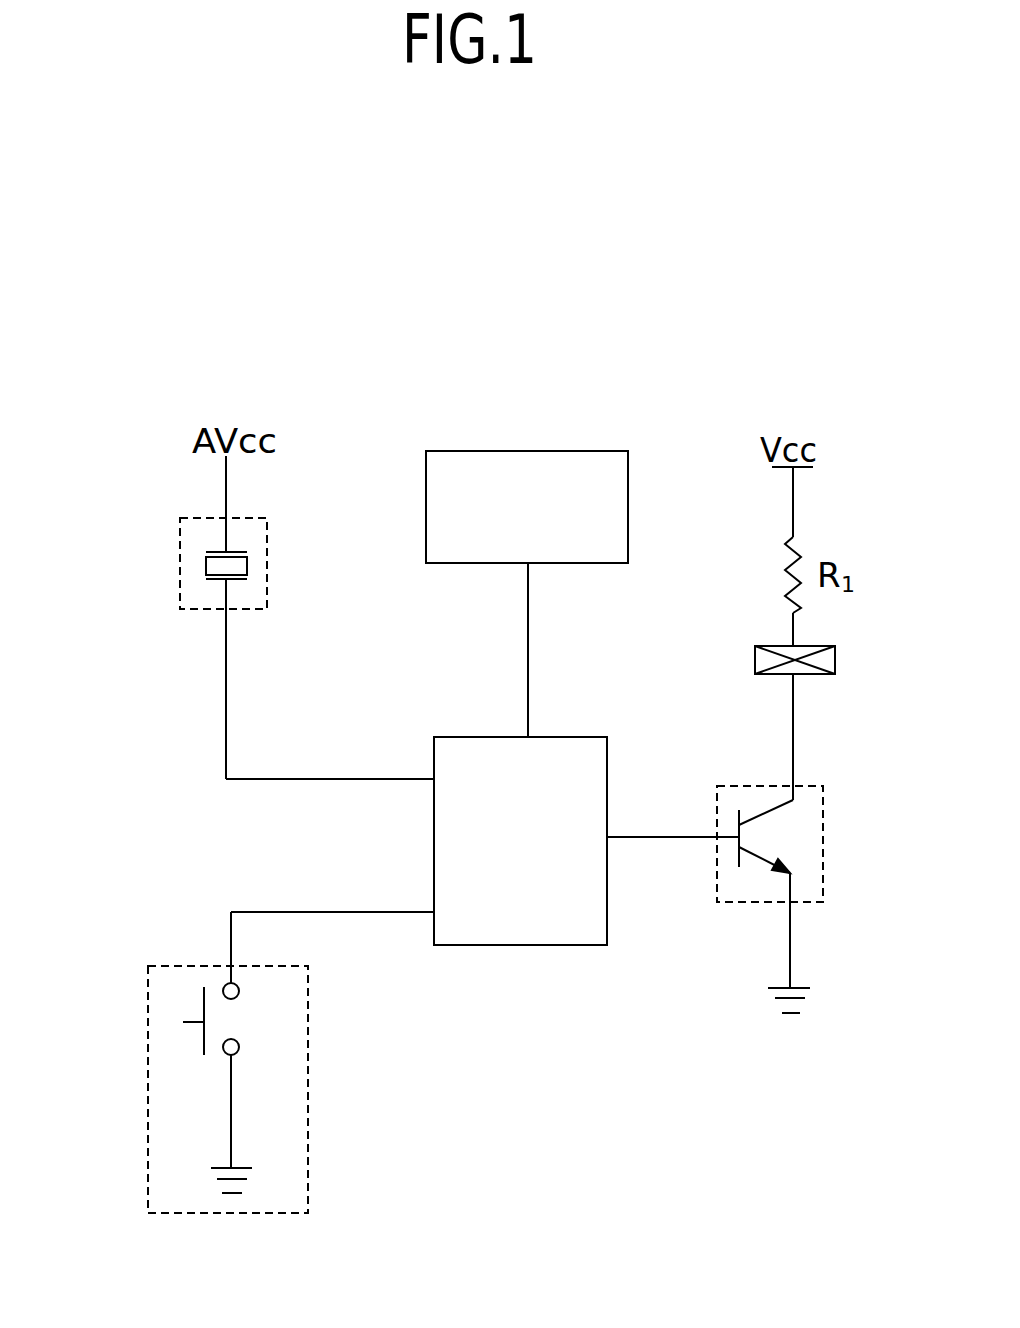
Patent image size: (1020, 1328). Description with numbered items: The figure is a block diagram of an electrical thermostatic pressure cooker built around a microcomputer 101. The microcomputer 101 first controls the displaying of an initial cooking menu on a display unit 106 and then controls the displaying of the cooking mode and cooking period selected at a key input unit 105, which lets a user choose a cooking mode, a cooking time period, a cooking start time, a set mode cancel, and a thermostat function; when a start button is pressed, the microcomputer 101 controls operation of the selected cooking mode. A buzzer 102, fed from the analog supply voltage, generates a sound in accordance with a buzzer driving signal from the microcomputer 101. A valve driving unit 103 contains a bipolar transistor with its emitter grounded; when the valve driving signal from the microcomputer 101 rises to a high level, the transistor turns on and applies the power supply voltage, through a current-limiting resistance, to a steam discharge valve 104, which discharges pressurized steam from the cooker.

The microcomputer 101 is at (552, 737).
The buzzer 102 is at (270, 525).
The valve driving unit 103 is at (823, 818).
The steam discharge valve 104 is at (835, 650).
The key input unit 105 is at (148, 1085).
The display unit 106 is at (628, 482).